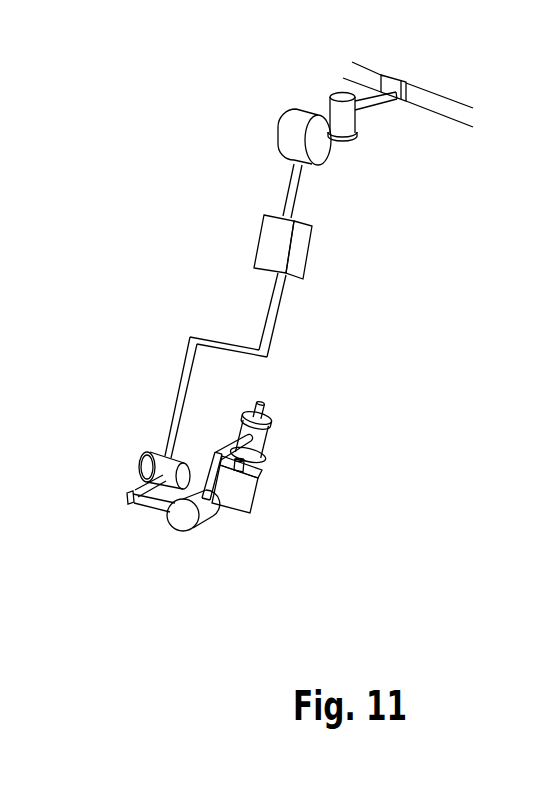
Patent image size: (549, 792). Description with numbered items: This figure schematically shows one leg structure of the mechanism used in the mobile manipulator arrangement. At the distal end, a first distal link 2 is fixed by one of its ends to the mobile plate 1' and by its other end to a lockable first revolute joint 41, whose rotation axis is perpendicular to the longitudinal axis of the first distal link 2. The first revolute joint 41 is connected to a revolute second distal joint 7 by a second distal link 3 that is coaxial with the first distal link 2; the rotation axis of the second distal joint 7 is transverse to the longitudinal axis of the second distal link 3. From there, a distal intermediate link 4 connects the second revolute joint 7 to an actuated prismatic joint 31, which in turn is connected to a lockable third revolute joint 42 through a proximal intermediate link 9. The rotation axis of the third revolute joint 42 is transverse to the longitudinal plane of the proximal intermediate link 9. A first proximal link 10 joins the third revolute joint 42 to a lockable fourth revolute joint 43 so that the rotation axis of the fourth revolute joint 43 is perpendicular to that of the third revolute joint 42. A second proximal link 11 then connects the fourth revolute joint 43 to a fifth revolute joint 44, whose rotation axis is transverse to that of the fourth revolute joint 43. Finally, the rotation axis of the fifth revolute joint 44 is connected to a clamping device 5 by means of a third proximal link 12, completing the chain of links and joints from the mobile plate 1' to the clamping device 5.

The mobile plate 1' is at (378, 72).
The first distal link 2 is at (378, 108).
The second distal link 3 is at (330, 120).
The distal intermediate link 4 is at (296, 190).
The clamping device 5 is at (247, 503).
The second distal joint 7 is at (278, 128).
The proximal intermediate link 9 is at (263, 333).
The first proximal link 10 is at (133, 503).
The second proximal link 11 is at (213, 453).
The third proximal link 12 is at (245, 463).
The actuated prismatic joint 31 is at (265, 240).
The first revolute joint 41 is at (340, 100).
The third revolute joint 42 is at (145, 465).
The fourth revolute joint 43 is at (188, 517).
The fifth revolute joint 44 is at (267, 428).